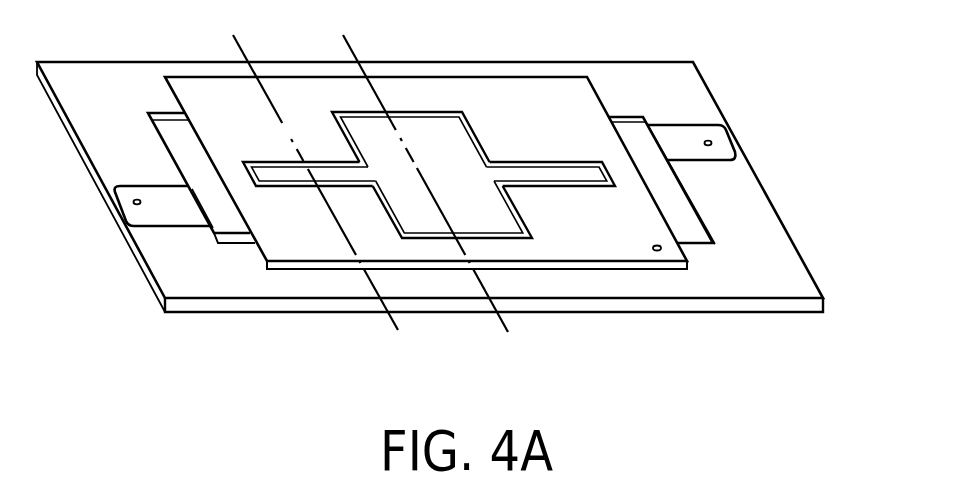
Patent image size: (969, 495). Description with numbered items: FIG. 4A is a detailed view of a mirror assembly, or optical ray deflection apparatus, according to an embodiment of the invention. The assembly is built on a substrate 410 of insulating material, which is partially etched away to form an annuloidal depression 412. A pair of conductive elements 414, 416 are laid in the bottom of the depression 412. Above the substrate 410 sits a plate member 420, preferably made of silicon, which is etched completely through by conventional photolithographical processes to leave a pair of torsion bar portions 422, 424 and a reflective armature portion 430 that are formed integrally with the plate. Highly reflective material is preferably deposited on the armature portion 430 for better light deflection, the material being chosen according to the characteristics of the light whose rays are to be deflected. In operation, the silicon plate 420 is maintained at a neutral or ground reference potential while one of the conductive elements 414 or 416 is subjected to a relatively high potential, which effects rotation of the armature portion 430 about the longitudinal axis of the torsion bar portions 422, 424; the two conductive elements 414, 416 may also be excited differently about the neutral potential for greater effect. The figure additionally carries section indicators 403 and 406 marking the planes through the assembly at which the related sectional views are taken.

The section line 403 is at (362, 42).
The section line 406 is at (250, 42).
The substrate 410 is at (733, 304).
The annuloidal depression 412 is at (172, 138).
The conductive element 414 is at (172, 217).
The conductive element 416 is at (696, 137).
The plate member 420 is at (624, 231).
The torsion bar portion 422 is at (277, 173).
The torsion bar portion 424 is at (577, 175).
The reflective armature portion 430 is at (483, 185).